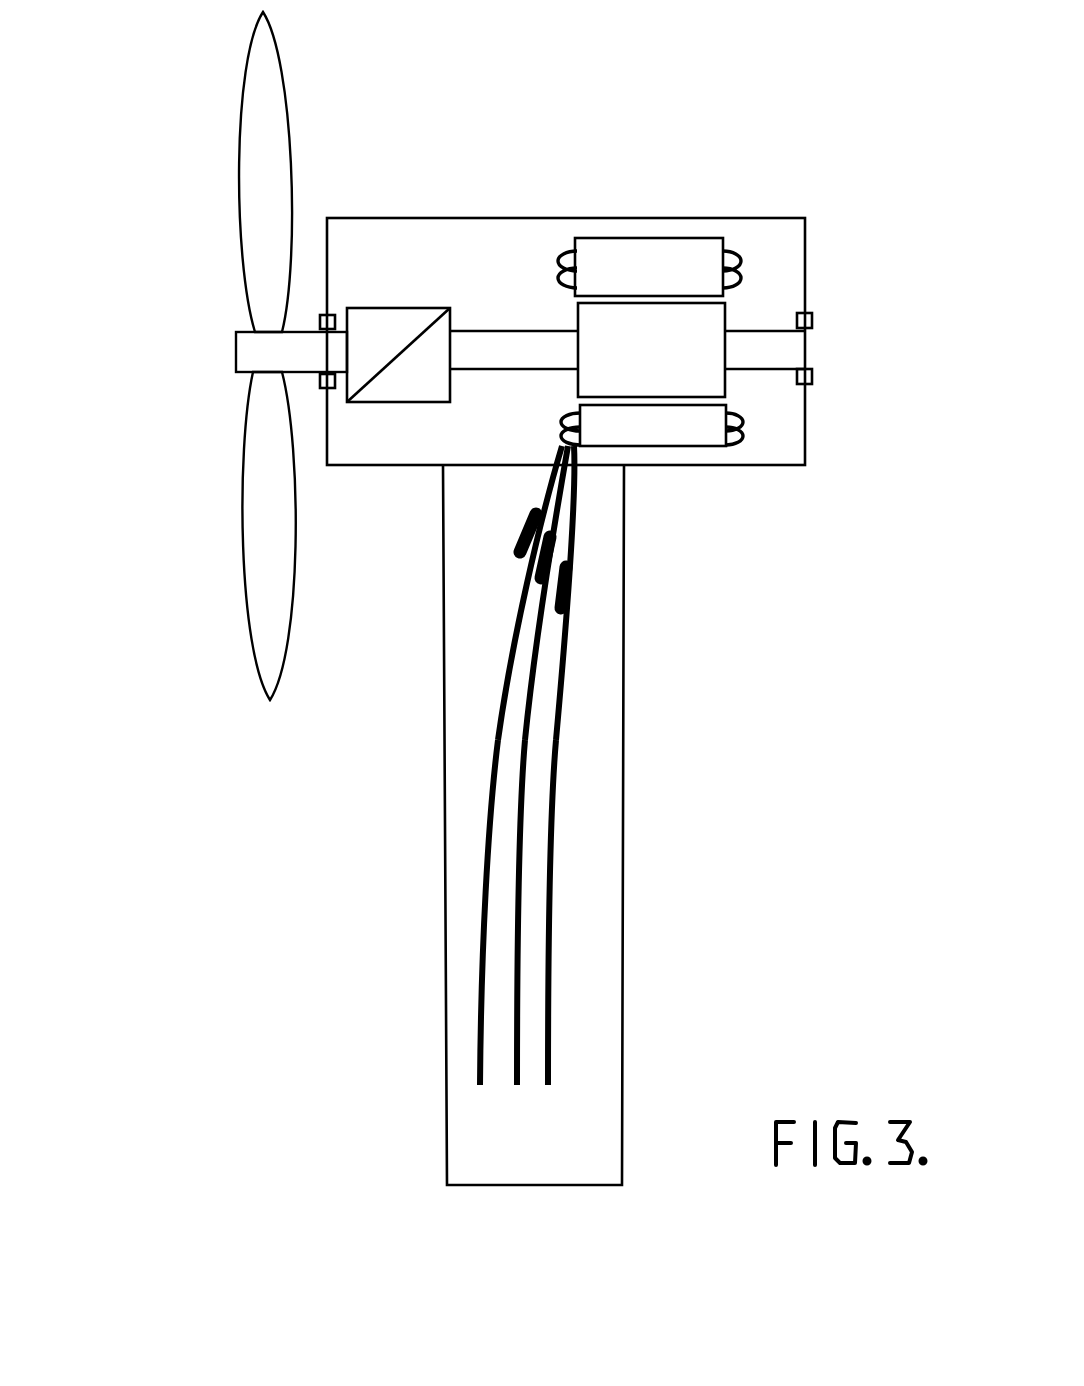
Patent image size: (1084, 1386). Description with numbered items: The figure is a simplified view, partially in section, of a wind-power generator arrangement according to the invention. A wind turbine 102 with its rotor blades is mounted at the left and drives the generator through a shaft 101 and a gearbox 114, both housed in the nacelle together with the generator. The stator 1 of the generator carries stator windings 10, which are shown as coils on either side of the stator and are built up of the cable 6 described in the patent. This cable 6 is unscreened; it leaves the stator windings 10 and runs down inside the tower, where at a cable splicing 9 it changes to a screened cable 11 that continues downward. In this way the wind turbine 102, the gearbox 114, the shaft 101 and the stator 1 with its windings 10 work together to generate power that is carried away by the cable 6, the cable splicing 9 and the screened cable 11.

The wind turbine 102 is at (205, 239).
The gearbox 114 is at (381, 278).
The shaft 101 is at (498, 330).
The stator 1 is at (645, 234).
The stator windings 10 is at (764, 387).
The cable 6 is at (602, 508).
The cable splicing 9 is at (602, 599).
The screened cable 11 is at (591, 721).